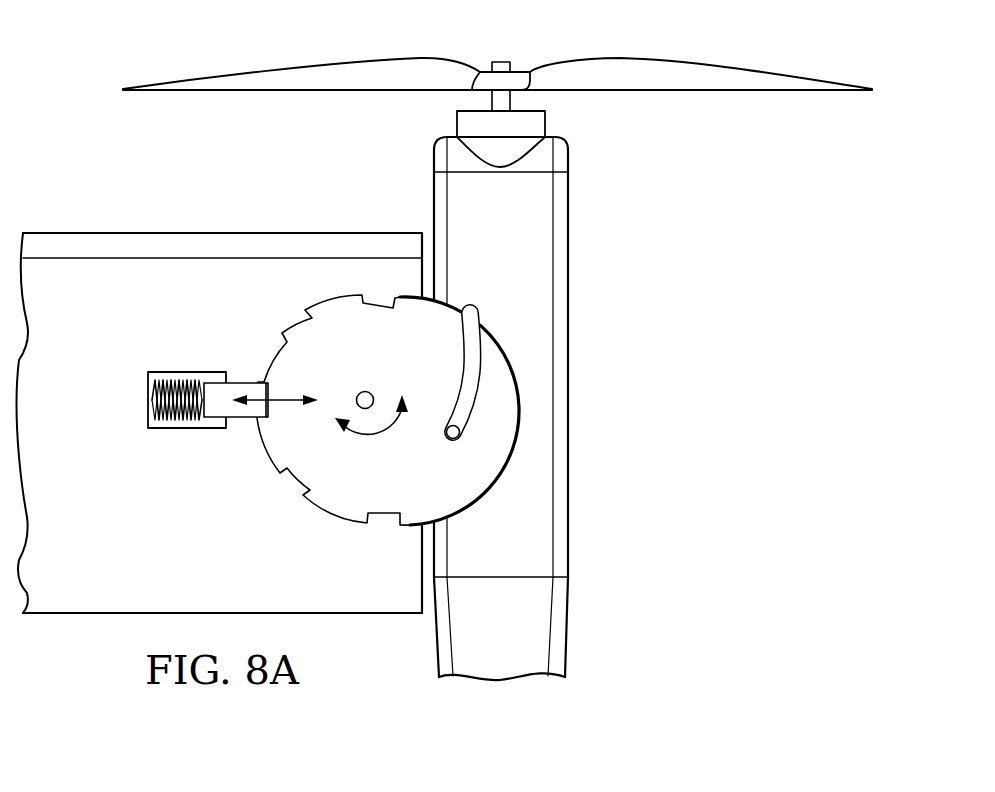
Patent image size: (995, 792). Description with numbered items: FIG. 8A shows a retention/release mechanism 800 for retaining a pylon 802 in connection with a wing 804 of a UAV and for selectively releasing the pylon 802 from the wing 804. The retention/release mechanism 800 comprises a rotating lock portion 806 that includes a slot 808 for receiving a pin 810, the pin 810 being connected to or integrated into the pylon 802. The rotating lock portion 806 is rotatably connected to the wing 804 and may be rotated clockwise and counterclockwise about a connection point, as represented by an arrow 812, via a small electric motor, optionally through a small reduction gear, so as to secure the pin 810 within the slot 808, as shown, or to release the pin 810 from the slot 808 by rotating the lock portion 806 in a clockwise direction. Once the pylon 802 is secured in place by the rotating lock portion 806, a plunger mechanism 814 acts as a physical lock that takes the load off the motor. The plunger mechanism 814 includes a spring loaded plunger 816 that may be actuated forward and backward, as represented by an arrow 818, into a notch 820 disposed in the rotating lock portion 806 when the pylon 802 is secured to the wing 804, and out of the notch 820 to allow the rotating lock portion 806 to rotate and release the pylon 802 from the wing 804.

The retention/release mechanism 800 is at (528, 414).
The pylon 802 is at (570, 297).
The wing 804 is at (220, 232).
The rotating lock portion 806 is at (326, 520).
The slot 808 is at (478, 388).
The pin 810 is at (458, 424).
The arrow 812 is at (384, 426).
The plunger mechanism 814 is at (212, 348).
The spring loaded plunger 816 is at (240, 419).
The arrow 818 is at (289, 404).
The notch 820 is at (268, 392).